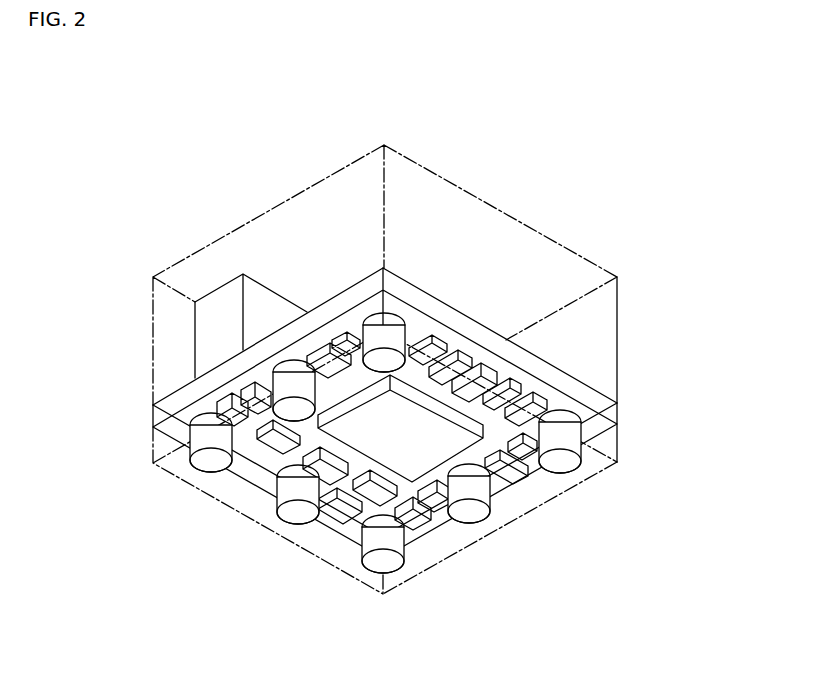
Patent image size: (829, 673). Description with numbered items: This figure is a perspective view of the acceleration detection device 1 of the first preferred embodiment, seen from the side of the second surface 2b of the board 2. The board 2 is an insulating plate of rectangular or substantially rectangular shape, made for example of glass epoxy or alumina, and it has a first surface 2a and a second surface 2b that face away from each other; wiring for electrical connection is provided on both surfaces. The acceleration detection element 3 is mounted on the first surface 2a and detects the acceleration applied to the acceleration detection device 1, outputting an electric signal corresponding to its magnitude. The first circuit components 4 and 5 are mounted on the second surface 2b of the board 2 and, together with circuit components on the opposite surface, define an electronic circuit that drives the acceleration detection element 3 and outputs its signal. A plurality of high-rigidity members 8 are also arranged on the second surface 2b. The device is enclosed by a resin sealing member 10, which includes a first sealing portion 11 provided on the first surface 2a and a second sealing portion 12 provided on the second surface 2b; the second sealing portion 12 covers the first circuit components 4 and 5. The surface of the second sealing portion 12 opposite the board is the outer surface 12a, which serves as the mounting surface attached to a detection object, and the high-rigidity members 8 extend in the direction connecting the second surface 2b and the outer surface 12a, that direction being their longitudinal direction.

The acceleration detection device 1 is at (160, 122).
The board 2 is at (143, 413).
The first surface 2a is at (180, 388).
The second surface 2b is at (172, 423).
The acceleration detection element 3 is at (224, 283).
The first circuit component 4 is at (465, 445).
The first circuit component 5 is at (338, 515).
The high-rigidity member 8 is at (290, 508).
The sealing member 10 is at (719, 293).
The first sealing portion 11 is at (626, 336).
The second sealing portion 12 is at (624, 435).
The outer surface 12a is at (596, 452).